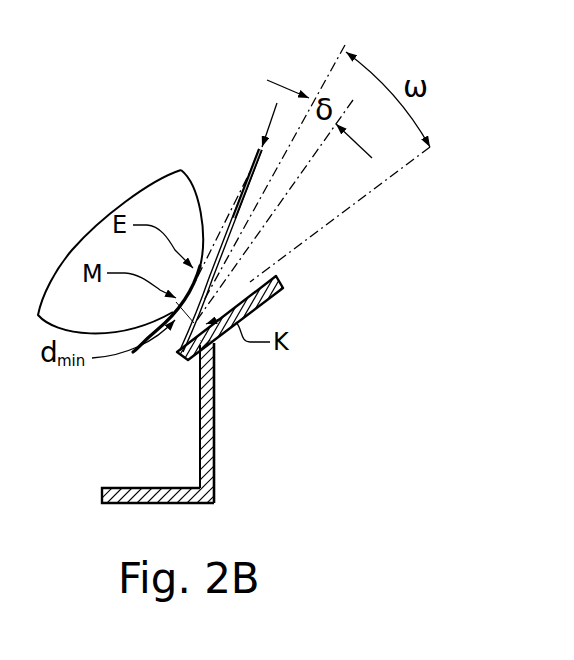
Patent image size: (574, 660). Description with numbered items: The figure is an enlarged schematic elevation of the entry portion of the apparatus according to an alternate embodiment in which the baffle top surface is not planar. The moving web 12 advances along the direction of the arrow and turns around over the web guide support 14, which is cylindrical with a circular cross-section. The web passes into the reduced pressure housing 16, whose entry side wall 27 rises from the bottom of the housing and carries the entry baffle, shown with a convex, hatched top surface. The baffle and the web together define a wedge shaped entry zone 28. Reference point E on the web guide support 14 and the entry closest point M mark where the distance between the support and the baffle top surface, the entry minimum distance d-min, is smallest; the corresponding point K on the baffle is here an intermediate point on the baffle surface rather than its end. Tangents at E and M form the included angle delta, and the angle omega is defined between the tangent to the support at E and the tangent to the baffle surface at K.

The moving web 12 is at (256, 163).
The web guide support 14 is at (181, 170).
The reduced pressure housing 16 is at (205, 420).
The entry side wall 27 is at (214, 415).
The wedge shaped entry zone 28 is at (232, 278).